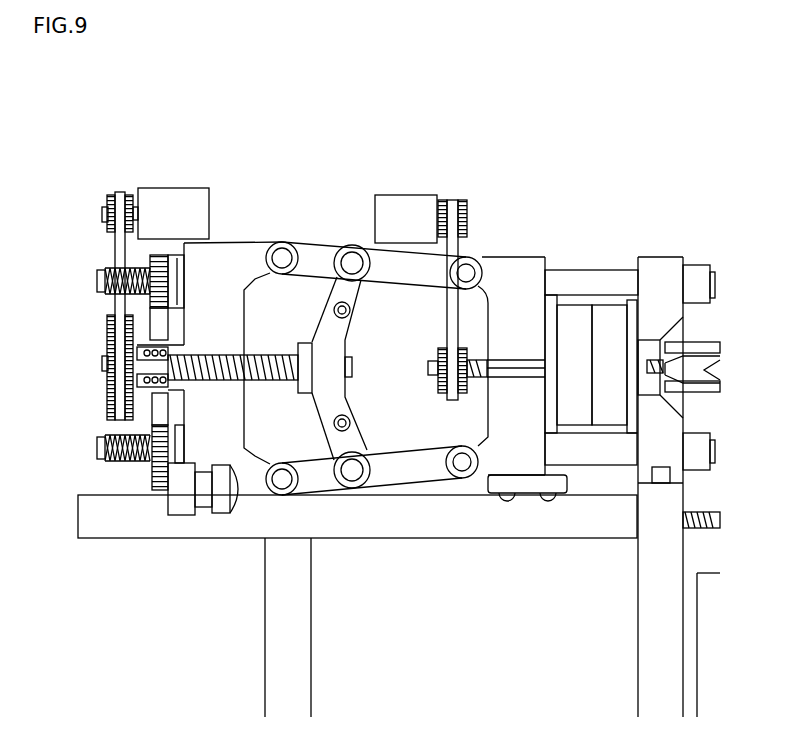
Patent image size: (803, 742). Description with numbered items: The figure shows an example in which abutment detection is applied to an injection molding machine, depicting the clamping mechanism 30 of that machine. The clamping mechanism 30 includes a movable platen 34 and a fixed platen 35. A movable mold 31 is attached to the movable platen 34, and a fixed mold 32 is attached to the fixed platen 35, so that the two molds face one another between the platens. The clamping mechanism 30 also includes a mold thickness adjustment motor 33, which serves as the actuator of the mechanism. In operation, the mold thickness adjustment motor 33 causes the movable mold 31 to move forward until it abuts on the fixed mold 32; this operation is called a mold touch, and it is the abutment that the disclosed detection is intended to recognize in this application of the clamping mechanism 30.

The clamping mechanism 30 is at (497, 68).
The movable mold 31 is at (578, 305).
The fixed mold 32 is at (610, 305).
The mold thickness adjustment motor 33 is at (158, 500).
The movable platen 34 is at (513, 257).
The fixed platen 35 is at (663, 257).